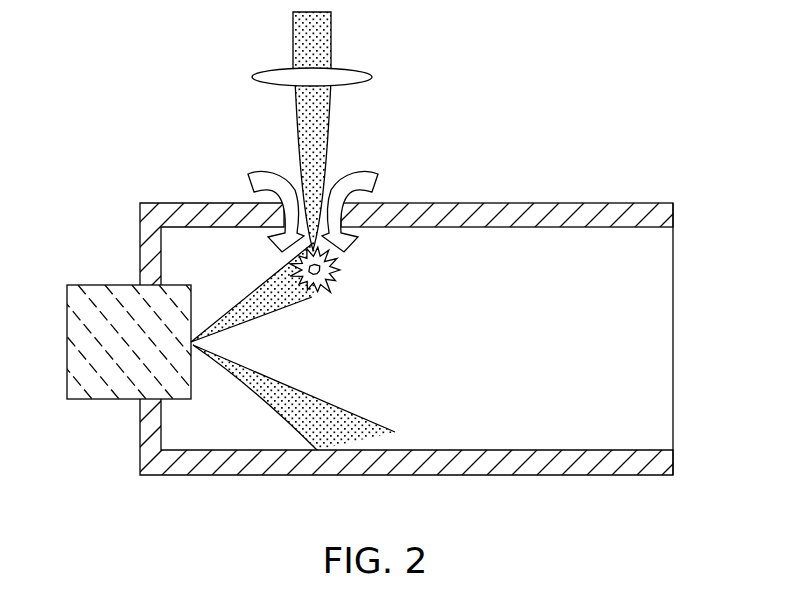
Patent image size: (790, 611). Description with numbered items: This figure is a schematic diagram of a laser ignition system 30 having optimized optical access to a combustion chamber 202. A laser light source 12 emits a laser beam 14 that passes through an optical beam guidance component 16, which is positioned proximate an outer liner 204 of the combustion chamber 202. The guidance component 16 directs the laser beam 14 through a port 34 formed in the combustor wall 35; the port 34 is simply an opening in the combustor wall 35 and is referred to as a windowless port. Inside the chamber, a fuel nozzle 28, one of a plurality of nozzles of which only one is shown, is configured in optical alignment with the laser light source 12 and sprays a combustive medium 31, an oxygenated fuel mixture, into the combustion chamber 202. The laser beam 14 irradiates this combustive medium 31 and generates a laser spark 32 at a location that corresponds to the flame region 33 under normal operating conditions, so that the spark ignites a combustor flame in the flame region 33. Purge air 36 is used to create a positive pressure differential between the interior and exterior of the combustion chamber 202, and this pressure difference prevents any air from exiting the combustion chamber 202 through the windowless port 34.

The laser light source 12 is at (331, 34).
The laser beam 14 is at (321, 118).
The optical beam guidance component 16 is at (372, 77).
The fuel nozzle 28 is at (66, 335).
The laser ignition system 30 is at (615, 79).
The combustive medium 31 is at (352, 420).
The laser spark 32 is at (327, 285).
The flame region 33 is at (313, 300).
The port 34 is at (297, 202).
The combustor wall 35 is at (180, 206).
The purge air 36 is at (363, 170).
The combustion chamber 202 is at (566, 353).
The outer liner 204 is at (597, 203).